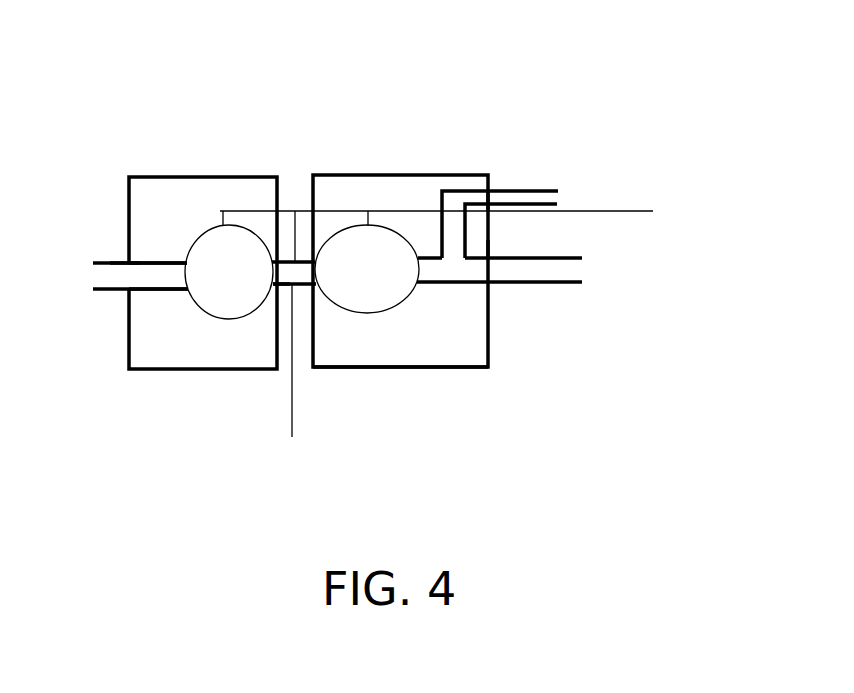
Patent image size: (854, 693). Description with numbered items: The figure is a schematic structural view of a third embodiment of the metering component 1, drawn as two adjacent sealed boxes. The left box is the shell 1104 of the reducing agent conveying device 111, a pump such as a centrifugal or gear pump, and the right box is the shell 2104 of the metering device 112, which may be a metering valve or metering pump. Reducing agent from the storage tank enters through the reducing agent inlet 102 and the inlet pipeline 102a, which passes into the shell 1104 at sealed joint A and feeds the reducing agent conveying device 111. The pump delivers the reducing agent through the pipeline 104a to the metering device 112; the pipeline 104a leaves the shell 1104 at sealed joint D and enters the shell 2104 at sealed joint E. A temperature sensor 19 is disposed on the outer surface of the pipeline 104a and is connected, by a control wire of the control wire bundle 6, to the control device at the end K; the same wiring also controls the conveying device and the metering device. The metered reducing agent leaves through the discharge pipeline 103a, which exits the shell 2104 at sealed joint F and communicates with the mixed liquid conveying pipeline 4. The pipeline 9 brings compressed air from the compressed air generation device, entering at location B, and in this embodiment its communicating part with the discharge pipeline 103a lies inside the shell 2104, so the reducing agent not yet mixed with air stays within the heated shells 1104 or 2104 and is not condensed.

The metering component 1 is at (332, 382).
The mixed liquid conveying pipeline 4 is at (582, 270).
The control wire bundle 6 is at (495, 209).
The pipeline 9 is at (558, 193).
The temperature sensor 19 is at (293, 252).
The reducing agent inlet 102 is at (97, 276).
The inlet pipeline 102a is at (152, 277).
The discharge pipeline 103a is at (458, 270).
The pipeline 104a is at (301, 367).
The reducing agent conveying device 111 is at (218, 254).
The metering device 112 is at (377, 297).
The shell of the reducing agent conveying device 1104 is at (222, 177).
The shell of the metering device 2104 is at (370, 174).
The joint A is at (125, 262).
The location B is at (492, 210).
The joint D is at (277, 289).
The joint E is at (318, 288).
The joint F is at (490, 253).
The end K is at (448, 219).